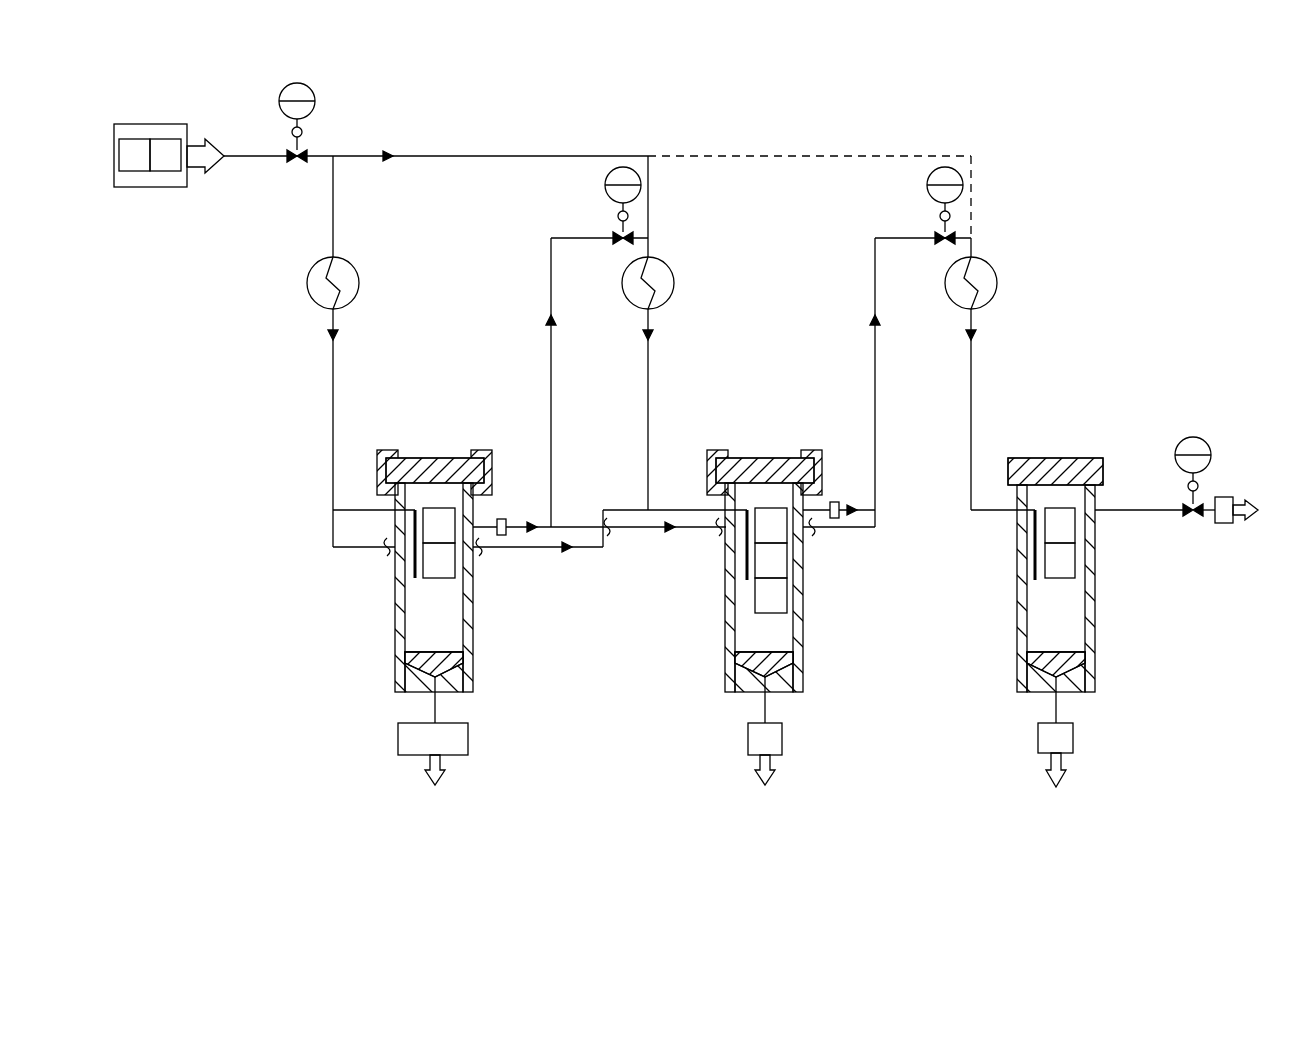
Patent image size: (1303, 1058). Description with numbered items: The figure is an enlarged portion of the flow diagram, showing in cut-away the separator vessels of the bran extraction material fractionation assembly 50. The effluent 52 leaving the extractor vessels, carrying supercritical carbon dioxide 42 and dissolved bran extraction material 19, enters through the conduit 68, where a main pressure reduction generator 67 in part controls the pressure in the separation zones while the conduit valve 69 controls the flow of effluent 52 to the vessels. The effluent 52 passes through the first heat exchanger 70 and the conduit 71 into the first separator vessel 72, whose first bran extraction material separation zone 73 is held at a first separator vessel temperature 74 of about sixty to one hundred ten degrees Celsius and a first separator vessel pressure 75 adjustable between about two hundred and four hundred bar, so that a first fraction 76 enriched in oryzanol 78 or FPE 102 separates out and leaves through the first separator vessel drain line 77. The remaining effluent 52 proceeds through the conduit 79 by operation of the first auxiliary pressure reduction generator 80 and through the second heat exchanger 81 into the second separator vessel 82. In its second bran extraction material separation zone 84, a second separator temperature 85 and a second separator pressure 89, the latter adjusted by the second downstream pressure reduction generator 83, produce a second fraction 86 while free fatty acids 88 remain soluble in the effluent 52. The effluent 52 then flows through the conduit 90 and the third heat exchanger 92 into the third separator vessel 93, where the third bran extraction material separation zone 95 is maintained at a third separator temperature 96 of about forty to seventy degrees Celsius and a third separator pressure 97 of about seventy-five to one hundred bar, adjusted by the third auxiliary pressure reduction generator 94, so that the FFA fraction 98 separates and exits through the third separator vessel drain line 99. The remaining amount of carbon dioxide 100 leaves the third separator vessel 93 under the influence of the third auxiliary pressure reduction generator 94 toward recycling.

The bran extraction material fractionation assembly 50 is at (1034, 132).
The effluent 52 is at (169, 125).
The supercritical carbon dioxide 42 is at (134, 155).
The bran extraction material 19 is at (173, 123).
The main pressure reduction generator 67 is at (313, 83).
The conduit 68 is at (450, 155).
The conduit valve 69 is at (297, 163).
The first heat exchanger 70 is at (359, 283).
The conduit 71 is at (333, 385).
The first separator vessel 72 is at (430, 571).
The first bran extraction material separation zone 73 is at (452, 627).
The first separator vessel temperature 74 is at (439, 525).
The first separator vessel pressure 75 is at (439, 560).
The first fraction 76 is at (460, 662).
The first separator vessel drain line 77 is at (435, 715).
The oryzanol 78 is at (432, 754).
The FPE 102 is at (432, 754).
The conduit 79 is at (553, 385).
The first auxiliary pressure reduction generator 80 is at (623, 156).
The second heat exchanger 81 is at (674, 283).
The second separator vessel 82 is at (761, 617).
The second bran extraction material separation zone 84 is at (782, 627).
The second separator temperature 85 is at (771, 560).
The free fatty acids 88 is at (771, 525).
The second separator pressure 89 is at (771, 595).
The second fraction 86 is at (790, 662).
The third separator pressure 97 is at (765, 715).
The second downstream pressure reduction generator 83 is at (945, 165).
The conduit 90 is at (877, 385).
The third heat exchanger 92 is at (997, 283).
The third separator vessel 93 is at (1053, 622).
The third bran extraction material separation zone 95 is at (1074, 627).
The third separator temperature 96 is at (1060, 560).
The FFA fraction 98 is at (1082, 663).
The third separator vessel drain line 99 is at (1056, 713).
The third auxiliary pressure reduction generator 94 is at (1193, 437).
The carbon dioxide 100 is at (1227, 497).